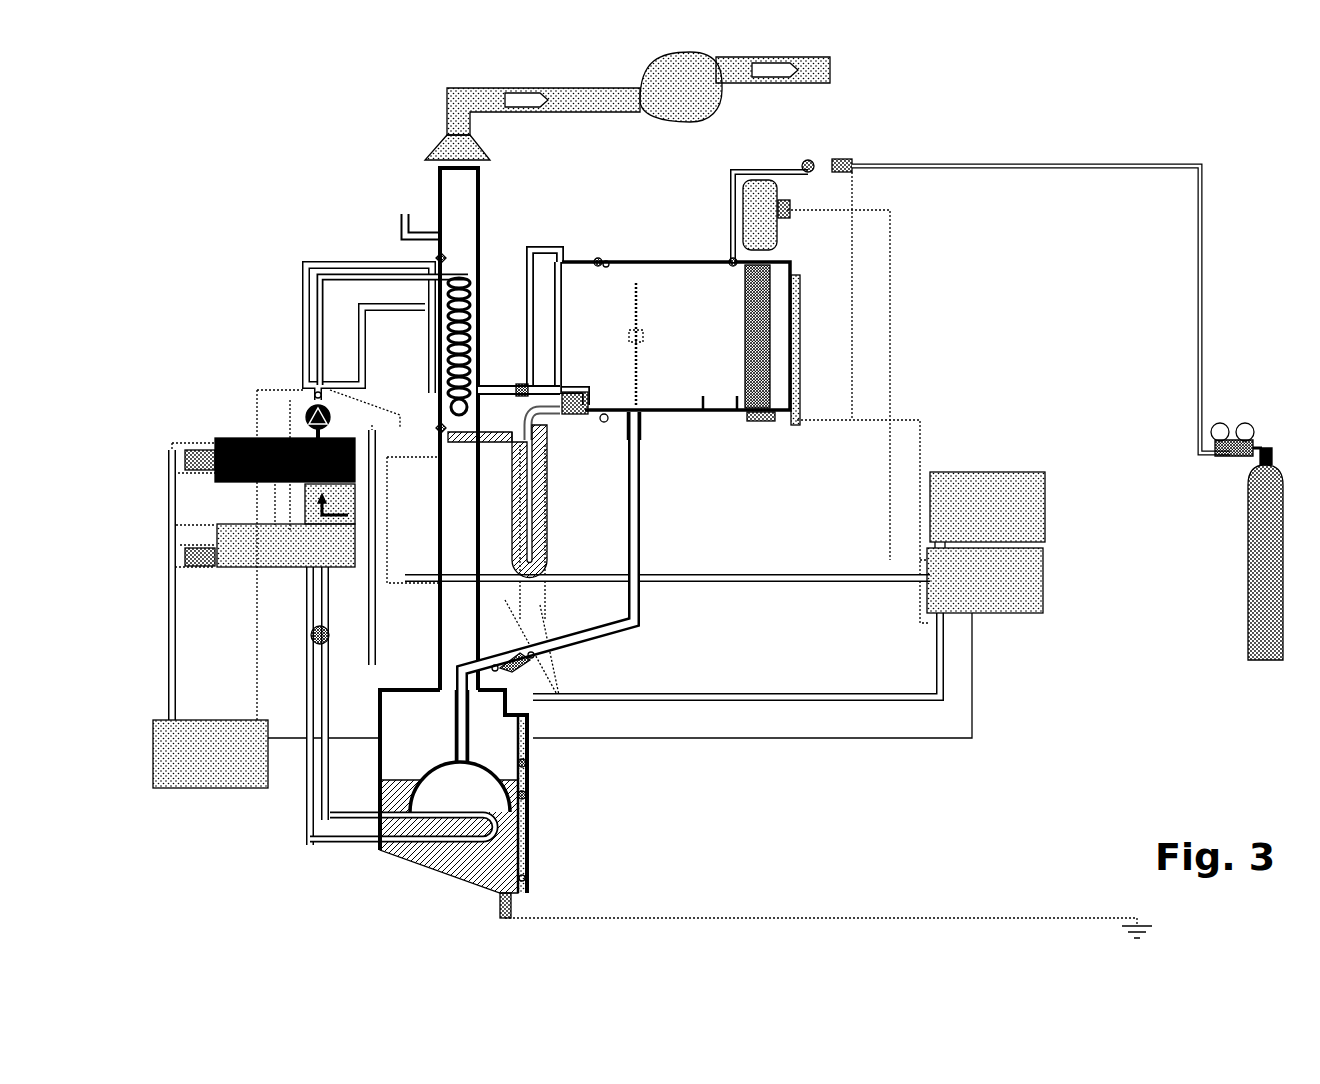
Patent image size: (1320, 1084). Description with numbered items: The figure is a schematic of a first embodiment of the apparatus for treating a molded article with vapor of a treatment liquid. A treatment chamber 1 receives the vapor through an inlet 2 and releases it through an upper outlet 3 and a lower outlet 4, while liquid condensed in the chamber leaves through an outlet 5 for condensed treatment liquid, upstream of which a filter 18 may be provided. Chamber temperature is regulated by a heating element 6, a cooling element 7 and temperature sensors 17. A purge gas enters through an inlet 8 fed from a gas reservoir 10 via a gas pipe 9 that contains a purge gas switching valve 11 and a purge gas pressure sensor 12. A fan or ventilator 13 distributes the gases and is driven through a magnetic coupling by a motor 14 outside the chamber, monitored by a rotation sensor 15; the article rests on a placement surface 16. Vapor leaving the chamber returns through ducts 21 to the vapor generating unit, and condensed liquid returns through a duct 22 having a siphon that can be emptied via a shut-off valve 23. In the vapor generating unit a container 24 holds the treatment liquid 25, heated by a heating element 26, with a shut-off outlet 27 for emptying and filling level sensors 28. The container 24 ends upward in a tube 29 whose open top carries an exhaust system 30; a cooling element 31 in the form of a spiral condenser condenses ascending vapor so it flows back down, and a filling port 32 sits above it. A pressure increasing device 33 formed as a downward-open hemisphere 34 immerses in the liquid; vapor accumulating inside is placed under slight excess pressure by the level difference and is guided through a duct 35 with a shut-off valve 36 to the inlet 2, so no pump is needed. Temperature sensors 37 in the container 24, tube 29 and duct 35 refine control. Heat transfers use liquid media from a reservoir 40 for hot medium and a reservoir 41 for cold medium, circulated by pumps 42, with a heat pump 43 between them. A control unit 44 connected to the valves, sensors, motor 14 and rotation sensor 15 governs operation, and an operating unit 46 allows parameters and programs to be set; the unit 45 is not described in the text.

The treatment chamber 1 is at (655, 292).
The inlet 2 is at (642, 420).
The upper outlet 3 is at (600, 258).
The lower outlet 4 is at (588, 394).
The outlet for condensed treatment liquid 5 is at (555, 420).
The heating element 6 is at (800, 350).
The cooling element 7 is at (530, 250).
The inlet for a purge gas 8 is at (730, 262).
The gas pipe 9 is at (1060, 170).
The gas reservoir 10 is at (1250, 588).
The purge gas switching valve 11 is at (808, 160).
The purge gas pressure sensor 12 is at (852, 160).
The fan or ventilator 13 is at (765, 295).
The motor 14 is at (777, 225).
The rotation sensor 15 is at (765, 422).
The placement surface 16 is at (705, 400).
The temperature sensors 17 is at (606, 262).
The filter 18 is at (553, 417).
The return ducts 21 is at (516, 384).
The duct having a siphon 22 is at (540, 520).
The shut-off valve 23 is at (527, 585).
The container 24 is at (380, 762).
The treatment liquid 25 is at (480, 868).
The heating element 26 is at (437, 845).
The outlet 27 is at (514, 905).
The filling level sensors 28 is at (528, 790).
The tube 29 is at (455, 598).
The exhaust system or waste air system 30 is at (447, 102).
The cooling element 31 is at (455, 300).
The filling port 32 is at (402, 220).
The pressure increasing device 33 is at (470, 780).
The hemisphere 34 is at (430, 768).
The duct 35 is at (636, 634).
The shut-off valve 36 is at (510, 660).
The temperature sensors 37 is at (446, 258).
The reservoir for a hot transfer medium 40 is at (258, 548).
The reservoir for a cold transfer medium 41 is at (220, 445).
The pumps 42 is at (308, 412).
The heat pump 43 is at (305, 503).
The control unit 44 is at (985, 577).
The power supply 45 is at (210, 754).
The operating unit 46 is at (987, 507).